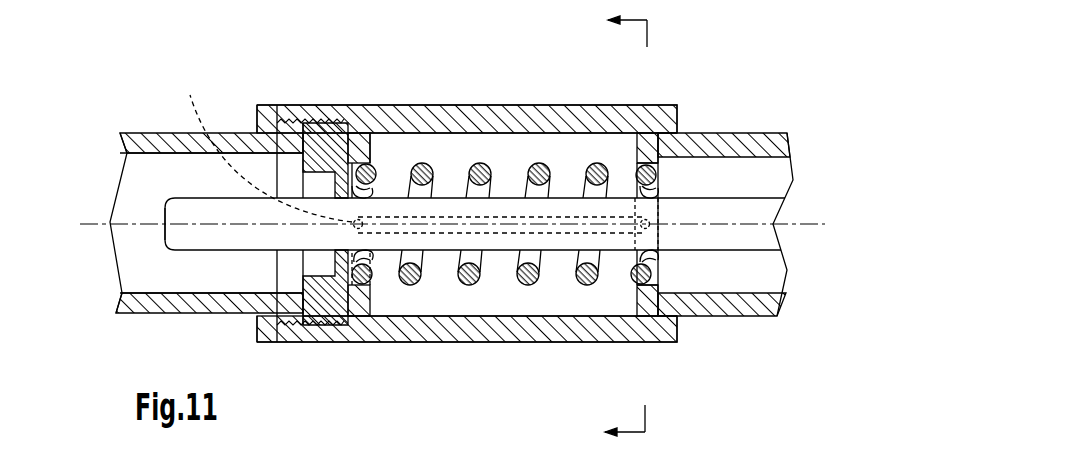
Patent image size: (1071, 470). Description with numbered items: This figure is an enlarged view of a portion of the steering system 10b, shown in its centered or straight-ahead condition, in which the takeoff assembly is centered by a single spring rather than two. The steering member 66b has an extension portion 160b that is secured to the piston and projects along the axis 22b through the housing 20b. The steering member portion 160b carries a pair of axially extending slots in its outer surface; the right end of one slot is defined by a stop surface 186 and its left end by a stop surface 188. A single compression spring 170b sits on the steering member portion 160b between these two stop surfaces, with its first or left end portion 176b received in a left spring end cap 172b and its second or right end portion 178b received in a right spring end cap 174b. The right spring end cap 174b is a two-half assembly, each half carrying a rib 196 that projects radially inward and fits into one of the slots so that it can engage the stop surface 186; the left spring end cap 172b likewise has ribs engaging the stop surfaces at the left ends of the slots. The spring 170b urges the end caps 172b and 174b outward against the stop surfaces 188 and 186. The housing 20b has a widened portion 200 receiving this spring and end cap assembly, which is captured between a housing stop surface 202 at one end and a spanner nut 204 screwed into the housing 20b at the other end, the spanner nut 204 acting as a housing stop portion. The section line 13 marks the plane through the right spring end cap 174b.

The steering system 10b is at (337, 367).
The section line 13- 13 is at (612, 228).
The housing 20b is at (742, 316).
The axis 22b is at (88, 220).
The steering member 66b is at (163, 233).
The extension portion of the steering member 160b is at (205, 242).
The spring 170b is at (488, 162).
The left spring end cap 172b is at (358, 285).
The right spring end cap 174b is at (655, 135).
The first end portion of the spring 176b is at (366, 266).
The second end portion of the spring 178b is at (640, 172).
The stop surface 186 is at (650, 226).
The stop surface 188 is at (258, 147).
The rib 196 is at (352, 222).
The widened portion of the housing 200 is at (434, 105).
The housing stop surface 202 is at (652, 318).
The spanner nut 204 is at (326, 140).